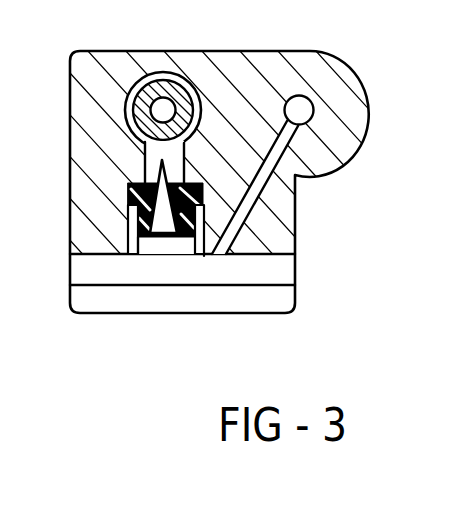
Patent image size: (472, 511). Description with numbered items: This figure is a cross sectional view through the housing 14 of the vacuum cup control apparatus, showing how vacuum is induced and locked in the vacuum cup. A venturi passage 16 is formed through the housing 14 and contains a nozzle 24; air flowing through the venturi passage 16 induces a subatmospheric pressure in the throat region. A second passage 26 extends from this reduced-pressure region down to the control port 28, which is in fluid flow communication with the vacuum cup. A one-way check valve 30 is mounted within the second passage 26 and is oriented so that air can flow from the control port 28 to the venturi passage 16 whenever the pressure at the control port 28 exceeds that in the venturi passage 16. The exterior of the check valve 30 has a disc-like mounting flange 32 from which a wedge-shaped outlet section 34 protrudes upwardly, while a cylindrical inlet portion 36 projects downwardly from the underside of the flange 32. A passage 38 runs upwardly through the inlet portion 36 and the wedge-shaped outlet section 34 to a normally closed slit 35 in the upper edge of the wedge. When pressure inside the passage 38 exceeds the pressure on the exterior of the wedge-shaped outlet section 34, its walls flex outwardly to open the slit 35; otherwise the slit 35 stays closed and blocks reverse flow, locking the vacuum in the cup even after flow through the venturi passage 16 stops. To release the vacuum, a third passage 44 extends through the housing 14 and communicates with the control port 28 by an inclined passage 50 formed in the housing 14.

The housing 14 is at (307, 53).
The venturi passage 16 is at (182, 84).
The nozzle 24 is at (138, 102).
The second passage 26 is at (150, 152).
The control port 28 is at (145, 238).
The one-way check valve 30 is at (128, 228).
The mounting flange 32 is at (205, 202).
The wedge-shaped outlet section 34 is at (186, 182).
The slit 35 is at (145, 165).
The cylindrical inlet portion 36 is at (204, 256).
The passage 38 is at (165, 217).
The third passage 44 is at (309, 108).
The inclined passage 50 is at (257, 184).